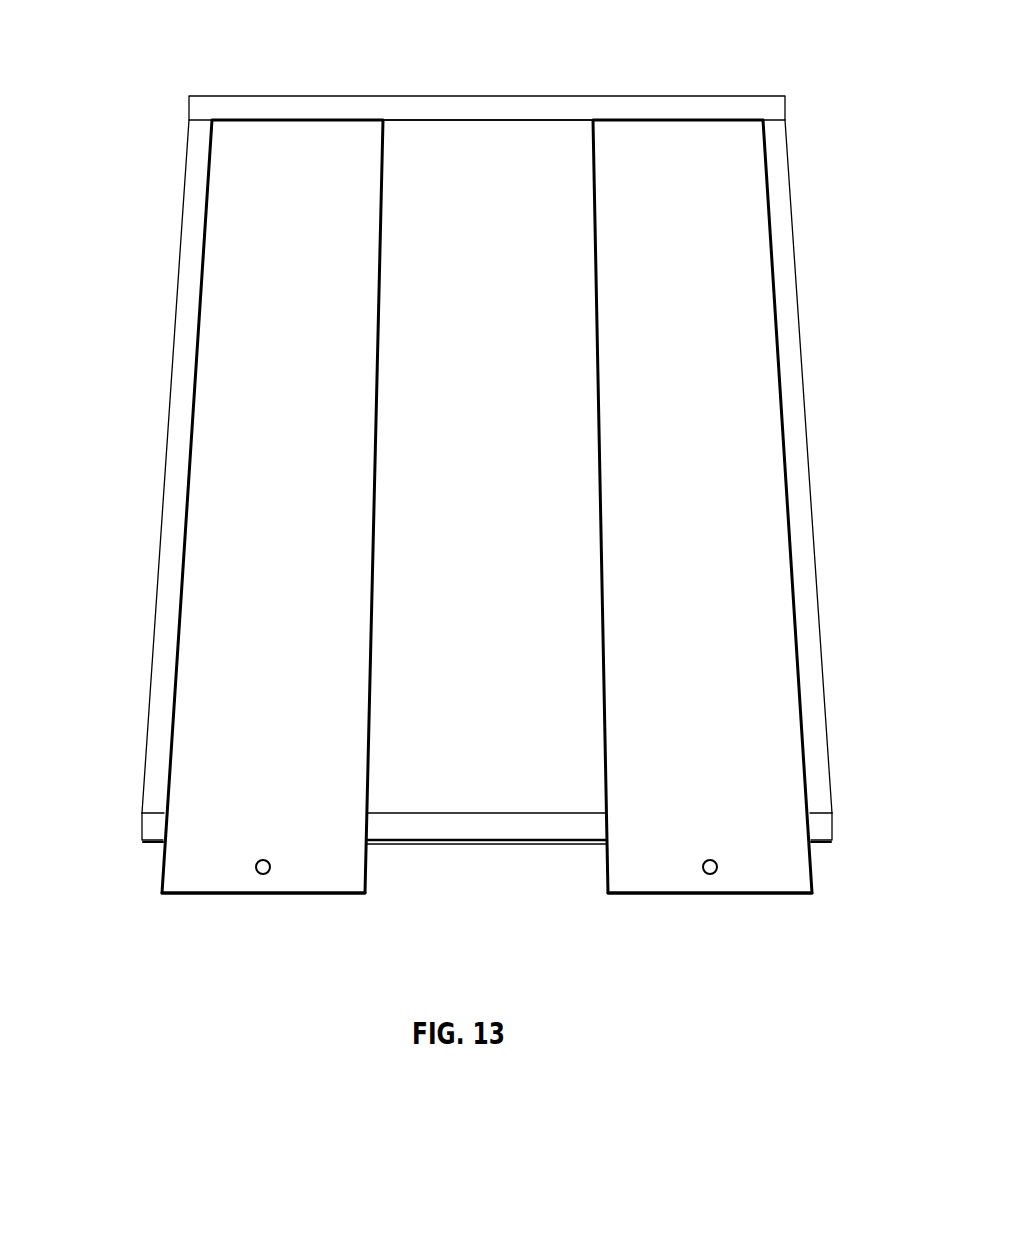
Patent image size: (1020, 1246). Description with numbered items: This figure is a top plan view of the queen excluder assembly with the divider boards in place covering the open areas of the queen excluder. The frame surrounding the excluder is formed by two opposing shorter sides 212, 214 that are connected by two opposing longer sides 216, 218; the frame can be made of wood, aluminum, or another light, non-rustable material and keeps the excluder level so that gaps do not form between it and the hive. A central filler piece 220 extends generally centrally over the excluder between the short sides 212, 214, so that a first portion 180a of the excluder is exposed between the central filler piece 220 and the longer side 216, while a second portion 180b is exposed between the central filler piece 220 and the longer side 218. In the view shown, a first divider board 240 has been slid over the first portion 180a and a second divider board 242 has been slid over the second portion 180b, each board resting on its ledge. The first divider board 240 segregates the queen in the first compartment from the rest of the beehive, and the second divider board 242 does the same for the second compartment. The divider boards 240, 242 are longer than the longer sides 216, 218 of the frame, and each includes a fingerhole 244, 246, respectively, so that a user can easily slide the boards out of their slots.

The shorter side 214 is at (425, 105).
The central filler piece 220 is at (501, 165).
The longer side 216 is at (183, 344).
The longer side 218 is at (792, 344).
The shorter side 212 is at (472, 830).
The first portion of queen excluder 180a is at (152, 825).
The second portion of queen excluder 180b is at (822, 825).
The first divider board 240 is at (190, 875).
The second divider board 242 is at (780, 875).
The fingerhole 244 is at (263, 875).
The fingerhole 246 is at (710, 875).